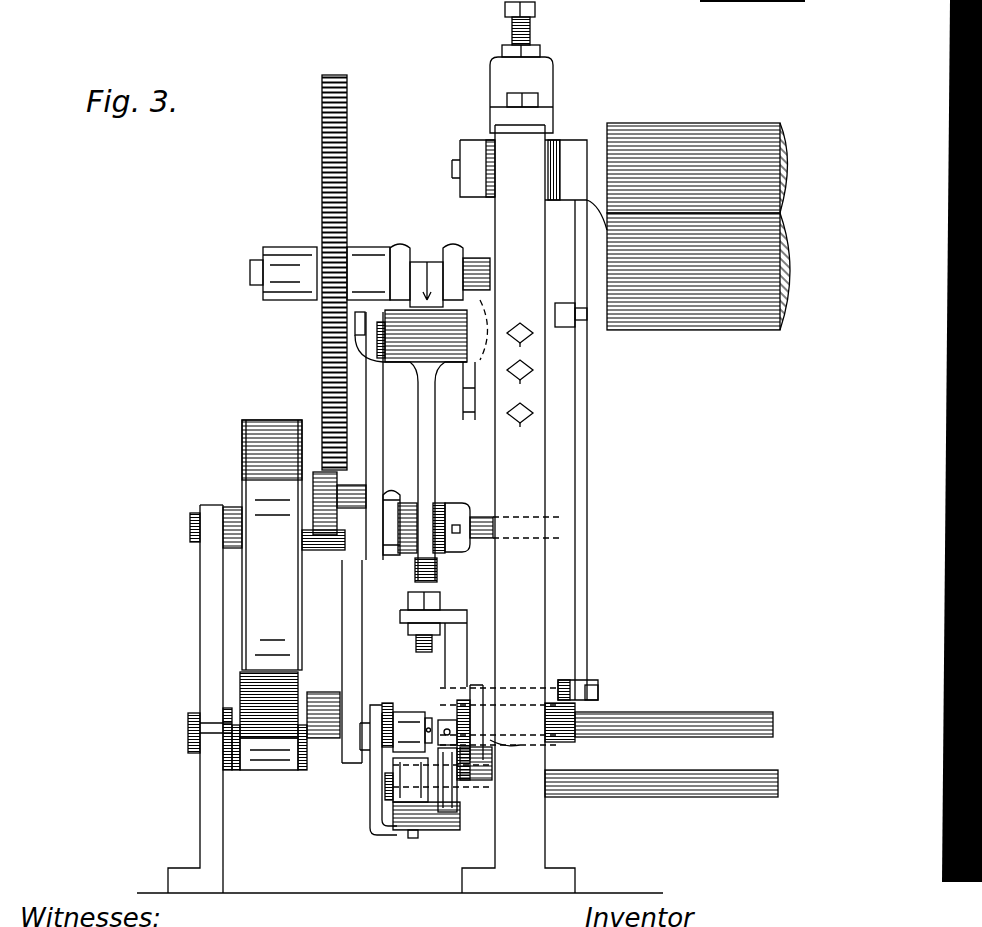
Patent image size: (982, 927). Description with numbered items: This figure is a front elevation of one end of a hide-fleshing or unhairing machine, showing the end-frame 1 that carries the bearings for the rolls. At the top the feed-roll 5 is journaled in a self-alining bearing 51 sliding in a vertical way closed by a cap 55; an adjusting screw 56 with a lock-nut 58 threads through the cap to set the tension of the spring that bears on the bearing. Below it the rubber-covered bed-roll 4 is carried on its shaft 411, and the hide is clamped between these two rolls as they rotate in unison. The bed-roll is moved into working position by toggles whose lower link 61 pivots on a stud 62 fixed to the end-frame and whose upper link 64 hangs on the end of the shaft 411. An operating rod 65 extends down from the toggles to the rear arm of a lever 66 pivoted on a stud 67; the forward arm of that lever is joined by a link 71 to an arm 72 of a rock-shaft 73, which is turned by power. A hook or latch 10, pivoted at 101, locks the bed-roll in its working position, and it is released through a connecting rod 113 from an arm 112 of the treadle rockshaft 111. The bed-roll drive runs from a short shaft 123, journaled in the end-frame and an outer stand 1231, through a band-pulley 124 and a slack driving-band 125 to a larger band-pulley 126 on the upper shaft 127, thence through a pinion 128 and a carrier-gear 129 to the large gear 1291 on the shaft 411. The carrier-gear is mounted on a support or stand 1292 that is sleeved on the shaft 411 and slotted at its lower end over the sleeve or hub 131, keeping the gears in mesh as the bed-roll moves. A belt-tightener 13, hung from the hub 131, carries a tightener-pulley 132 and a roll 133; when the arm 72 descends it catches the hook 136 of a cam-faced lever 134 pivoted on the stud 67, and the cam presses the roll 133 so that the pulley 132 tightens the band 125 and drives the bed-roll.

The end-frame 1 is at (530, 470).
The bed-roll 4 is at (733, 328).
The feed-roll 5 is at (705, 132).
The hook or latch 10 is at (565, 318).
The pivot of hook or latch 101 is at (586, 320).
The belt-tightener 13 is at (356, 655).
The self-alining bearing 51 is at (558, 142).
The cap 55 is at (492, 63).
The adjusting screw 56 is at (535, 28).
The lock-nut 58 is at (541, 50).
The lower or outer toggle link 61 is at (392, 250).
The stud 62 is at (375, 336).
The upper or inner toggle link 64 is at (425, 258).
The operating rod 65 is at (438, 472).
The lever 66 is at (567, 690).
The stud 67 is at (515, 742).
The link 71 is at (462, 800).
The arm 72 is at (410, 838).
The rock-shaft 73 is at (692, 798).
The rockshaft 111 is at (668, 718).
The arm 112 is at (600, 692).
The connecting rod 113 is at (588, 522).
The shaft 123 is at (220, 742).
The band-pulley 124 is at (235, 782).
The driving-band 125 is at (240, 648).
The band-pulley 126 is at (240, 435).
The upper shaft 127 is at (188, 528).
The pinion 128 is at (325, 551).
The carrier-gear 129 is at (312, 478).
The sleeve or hub 131 is at (390, 557).
The tightener-pulley 132 is at (186, 735).
The roll 133 is at (370, 770).
The lever 134 is at (458, 705).
The hook 136 is at (370, 836).
The shaft of the bed-roll 411 is at (248, 273).
The stand 1231 is at (200, 633).
The large gear 1291 is at (320, 152).
The support or stand 1292 is at (364, 400).